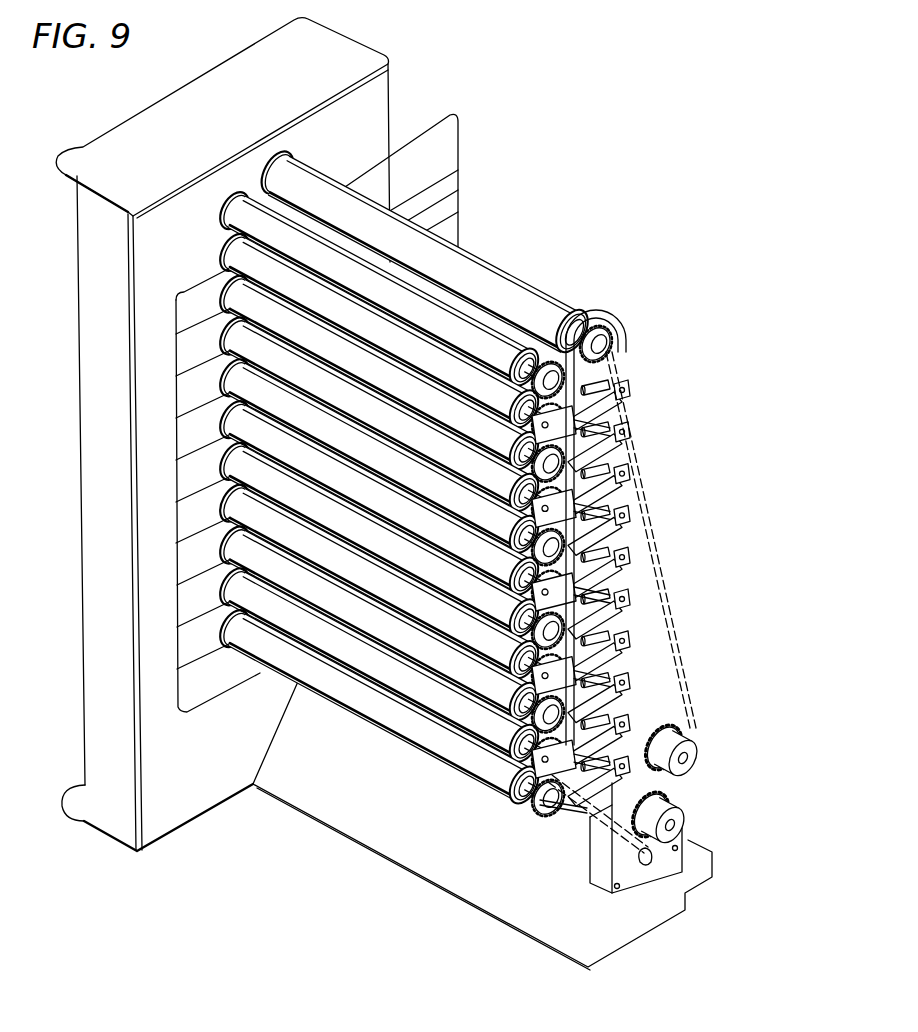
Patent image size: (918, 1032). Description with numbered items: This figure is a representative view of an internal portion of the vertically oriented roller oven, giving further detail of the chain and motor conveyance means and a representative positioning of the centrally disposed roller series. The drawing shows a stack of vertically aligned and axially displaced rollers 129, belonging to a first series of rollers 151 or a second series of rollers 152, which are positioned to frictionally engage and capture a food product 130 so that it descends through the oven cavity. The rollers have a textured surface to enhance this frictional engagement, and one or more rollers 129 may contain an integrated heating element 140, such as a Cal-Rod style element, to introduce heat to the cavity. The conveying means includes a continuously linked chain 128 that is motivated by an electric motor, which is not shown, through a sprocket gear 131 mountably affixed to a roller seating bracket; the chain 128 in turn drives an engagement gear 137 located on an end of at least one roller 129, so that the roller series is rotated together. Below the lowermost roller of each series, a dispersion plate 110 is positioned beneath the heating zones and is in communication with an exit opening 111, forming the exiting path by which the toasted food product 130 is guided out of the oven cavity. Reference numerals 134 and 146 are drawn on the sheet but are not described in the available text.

The dispersion plate 110 is at (414, 823).
The exit opening 111 is at (253, 786).
The continuously linked chain 128 is at (672, 615).
The roller 129 is at (475, 275).
The food product 130 is at (693, 753).
The sprocket gear 131 is at (680, 823).
The motor mounting bracket 134 is at (625, 872).
The engagement gear 137 is at (537, 323).
The integrated heating element 140 is at (605, 535).
The mounting tab 146 is at (607, 497).
The first series of rollers 151 is at (460, 167).
The second series of rollers 152 is at (150, 468).